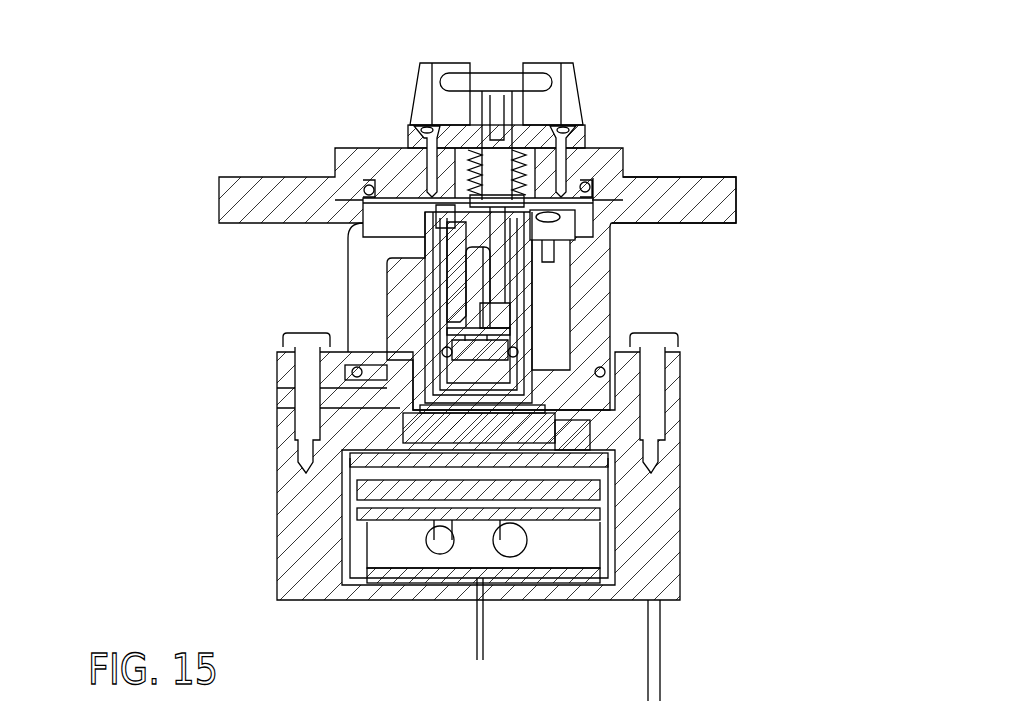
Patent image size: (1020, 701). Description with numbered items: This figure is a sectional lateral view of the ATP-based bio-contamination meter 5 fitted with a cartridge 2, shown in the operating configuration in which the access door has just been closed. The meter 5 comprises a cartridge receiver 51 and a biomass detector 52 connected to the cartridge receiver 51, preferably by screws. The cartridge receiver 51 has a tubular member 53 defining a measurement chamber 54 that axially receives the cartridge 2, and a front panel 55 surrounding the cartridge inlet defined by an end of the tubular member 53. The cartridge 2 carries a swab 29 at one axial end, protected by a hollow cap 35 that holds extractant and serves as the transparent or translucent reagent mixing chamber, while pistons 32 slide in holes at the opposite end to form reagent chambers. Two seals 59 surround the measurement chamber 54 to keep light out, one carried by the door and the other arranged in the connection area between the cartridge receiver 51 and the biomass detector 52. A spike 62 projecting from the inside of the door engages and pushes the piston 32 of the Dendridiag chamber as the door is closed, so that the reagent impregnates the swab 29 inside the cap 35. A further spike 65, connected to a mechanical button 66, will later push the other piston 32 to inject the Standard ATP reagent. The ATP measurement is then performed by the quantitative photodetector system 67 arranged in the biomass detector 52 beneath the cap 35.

The cartridge 2 is at (412, 290).
The bio-contamination meter 5 is at (172, 225).
The swab 29 is at (520, 325).
The piston 32 is at (408, 265).
The cap 35 is at (603, 388).
The cartridge receiver 51 is at (700, 238).
The biomass detector 52 is at (700, 472).
The tubular member 53 is at (445, 303).
The measurement chamber 54 is at (540, 258).
The front panel 55 is at (702, 178).
The seal 59 is at (365, 188).
The spike 62 is at (440, 216).
The further spike 65 is at (562, 130).
The mechanical button 66 is at (493, 83).
The quantitative photodetector system 67 is at (566, 538).